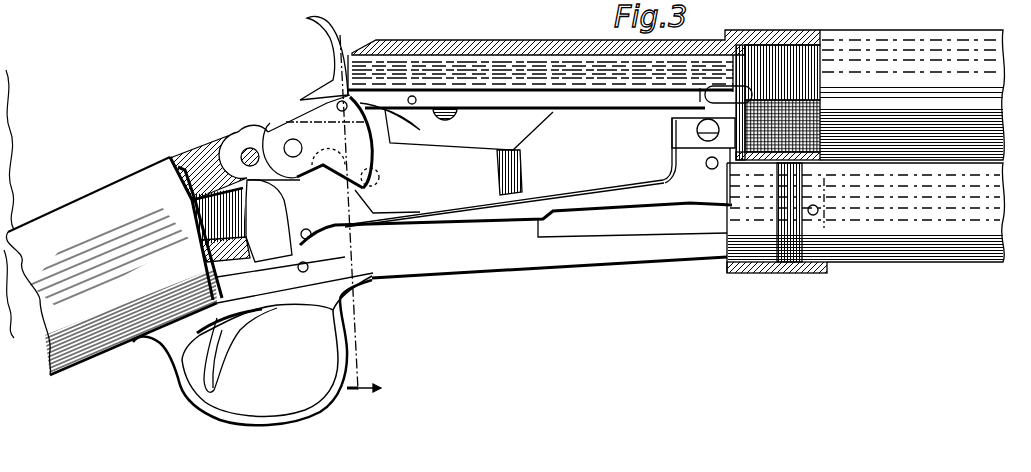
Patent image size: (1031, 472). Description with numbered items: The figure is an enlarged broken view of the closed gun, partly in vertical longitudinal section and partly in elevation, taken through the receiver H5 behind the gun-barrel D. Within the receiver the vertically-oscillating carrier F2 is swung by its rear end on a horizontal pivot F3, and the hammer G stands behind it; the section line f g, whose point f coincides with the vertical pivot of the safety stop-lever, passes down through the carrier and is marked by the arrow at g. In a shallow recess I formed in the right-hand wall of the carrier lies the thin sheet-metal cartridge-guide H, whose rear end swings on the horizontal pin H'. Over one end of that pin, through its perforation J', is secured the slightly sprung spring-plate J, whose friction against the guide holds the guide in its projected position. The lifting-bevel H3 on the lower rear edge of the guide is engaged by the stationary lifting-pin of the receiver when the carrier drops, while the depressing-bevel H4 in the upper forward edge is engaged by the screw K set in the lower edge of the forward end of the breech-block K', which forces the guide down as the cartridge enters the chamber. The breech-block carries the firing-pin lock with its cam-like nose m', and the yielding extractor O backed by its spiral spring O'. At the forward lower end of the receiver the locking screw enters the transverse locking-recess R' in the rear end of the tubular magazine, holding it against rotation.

The vertically-arranged pivot f is at (345, 196).
The hammer G is at (345, 52).
The horizontal pivot F3 is at (248, 147).
The perforation J' is at (283, 123).
The horizontal pin H' is at (313, 141).
The sheet-metal plate J is at (381, 142).
The lifting-bevel H3 is at (365, 208).
The lifting cam-like nose m' is at (458, 116).
The depressing-bevel H4 is at (527, 143).
The cartridge-guide H is at (508, 167).
The breech-block K' is at (584, 69).
The spiral spring O' is at (684, 96).
The extractor O is at (728, 94).
The screw K is at (701, 167).
The shallow recess I is at (695, 160).
The vertically-oscillating carrier F2 is at (504, 204).
The locking-recess R' is at (833, 202).
The gun-barrel D is at (975, 70).
The receiver H5 is at (516, 240).
The section line point g is at (364, 403).